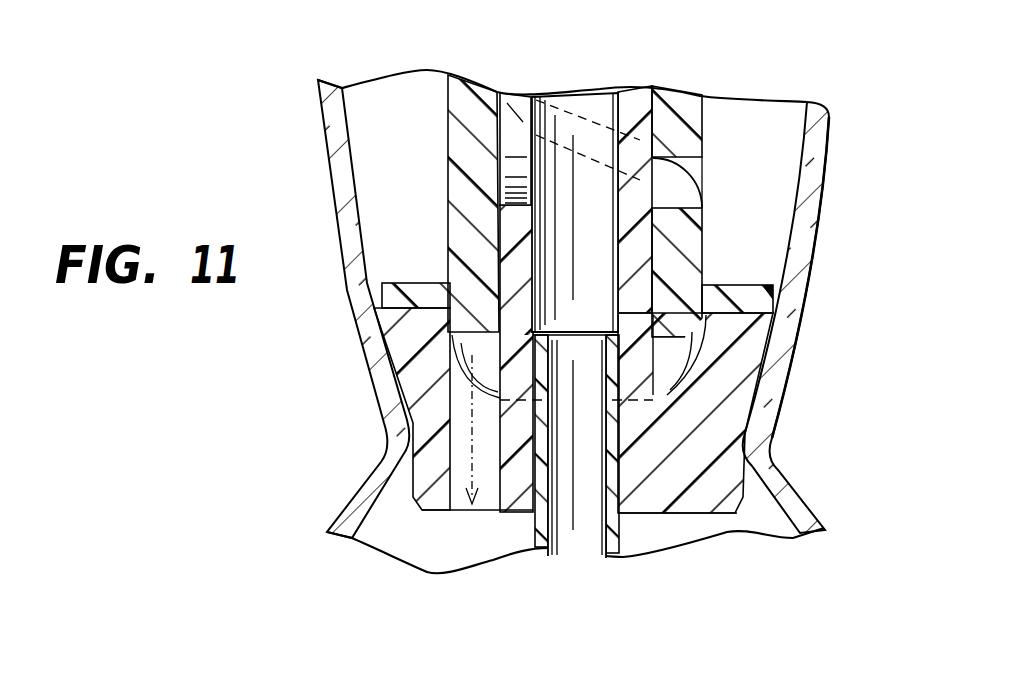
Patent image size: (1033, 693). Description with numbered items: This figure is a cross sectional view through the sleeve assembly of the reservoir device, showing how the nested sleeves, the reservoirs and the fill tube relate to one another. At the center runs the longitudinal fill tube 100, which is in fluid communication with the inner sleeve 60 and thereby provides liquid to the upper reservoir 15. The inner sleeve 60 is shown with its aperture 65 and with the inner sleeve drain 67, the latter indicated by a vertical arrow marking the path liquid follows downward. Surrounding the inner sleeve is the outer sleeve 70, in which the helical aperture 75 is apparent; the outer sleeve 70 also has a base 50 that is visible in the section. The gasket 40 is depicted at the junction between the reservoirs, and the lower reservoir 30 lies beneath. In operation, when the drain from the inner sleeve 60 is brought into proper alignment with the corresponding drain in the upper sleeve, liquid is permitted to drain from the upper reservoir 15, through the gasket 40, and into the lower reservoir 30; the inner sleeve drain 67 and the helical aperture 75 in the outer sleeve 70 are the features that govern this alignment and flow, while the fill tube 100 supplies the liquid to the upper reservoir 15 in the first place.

The upper reservoir 15 is at (328, 152).
The lower reservoir 30 is at (327, 532).
The gasket 40 is at (742, 497).
The base of the outer sleeve 50 is at (398, 290).
The inner sleeve 60 is at (508, 232).
The aperture 65 is at (513, 133).
The inner sleeve drain 67 is at (472, 493).
The outer sleeve 70 is at (687, 98).
The helical aperture 75 is at (697, 187).
The longitudinal fill tube 100 is at (633, 557).